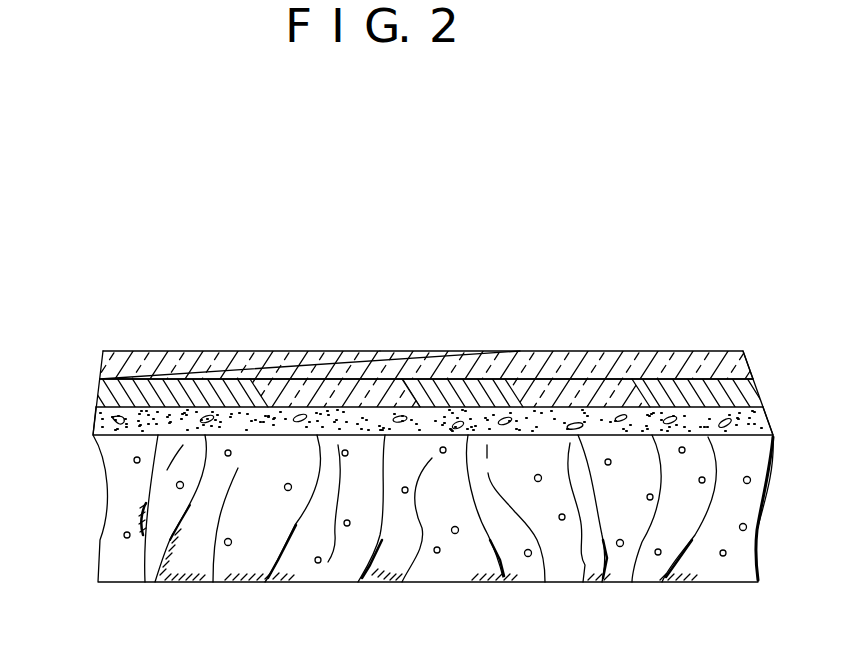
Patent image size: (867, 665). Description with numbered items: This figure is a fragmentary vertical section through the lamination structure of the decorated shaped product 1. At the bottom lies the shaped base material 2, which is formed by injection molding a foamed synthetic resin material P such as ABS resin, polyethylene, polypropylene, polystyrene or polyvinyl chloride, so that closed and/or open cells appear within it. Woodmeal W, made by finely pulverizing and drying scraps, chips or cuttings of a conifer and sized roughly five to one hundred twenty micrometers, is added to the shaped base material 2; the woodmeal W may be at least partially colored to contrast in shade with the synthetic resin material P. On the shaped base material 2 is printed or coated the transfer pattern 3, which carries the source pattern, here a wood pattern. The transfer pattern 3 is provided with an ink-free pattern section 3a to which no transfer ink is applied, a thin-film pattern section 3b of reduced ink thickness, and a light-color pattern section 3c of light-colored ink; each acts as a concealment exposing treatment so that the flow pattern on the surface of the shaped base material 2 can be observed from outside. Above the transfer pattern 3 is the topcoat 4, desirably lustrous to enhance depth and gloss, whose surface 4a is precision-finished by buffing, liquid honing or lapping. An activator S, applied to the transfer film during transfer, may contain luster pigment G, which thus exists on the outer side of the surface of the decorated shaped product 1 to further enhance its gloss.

The decorated shaped product 1 is at (598, 212).
The shaped base material 2 is at (115, 520).
The transfer pattern 3 is at (750, 392).
The ink-free pattern section 3a is at (582, 390).
The thin-film pattern section 3b is at (325, 388).
The light-color pattern section 3c is at (150, 390).
The topcoat 4 is at (695, 362).
The surface of the topcoat 4a is at (442, 352).
The activator S is at (757, 422).
The luster pigment G is at (118, 422).
The woodmeal W is at (742, 527).
The synthetic resin material P is at (166, 565).